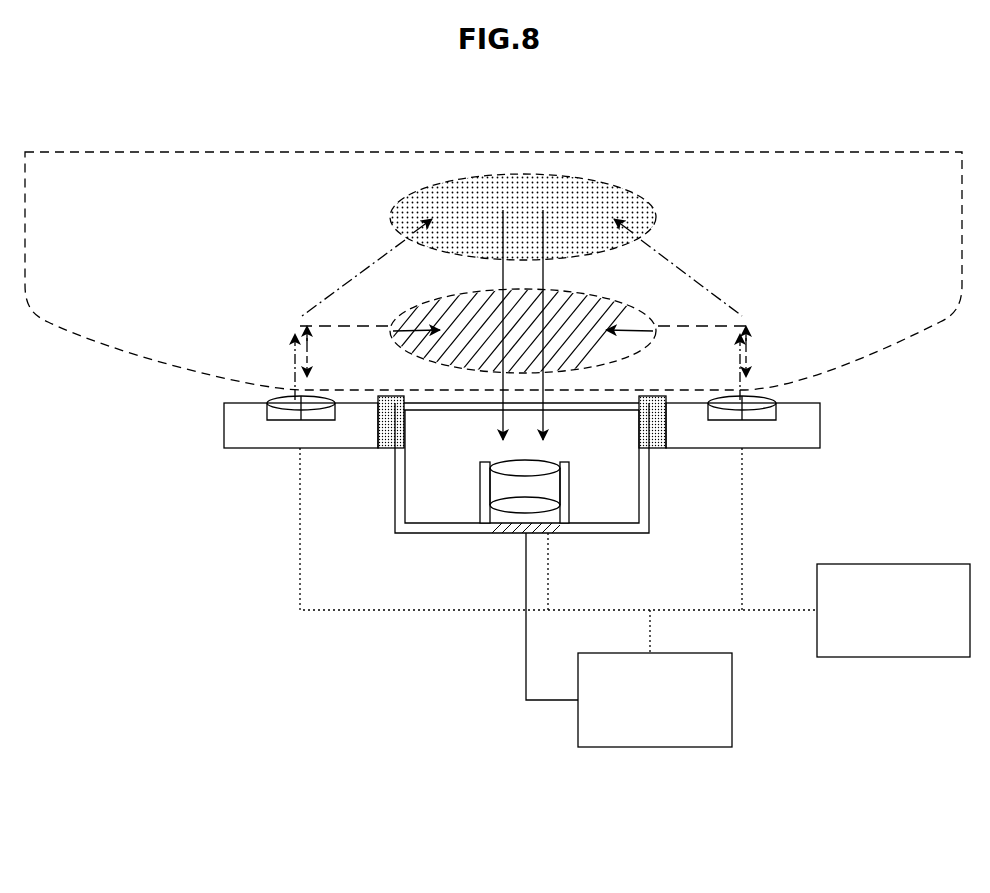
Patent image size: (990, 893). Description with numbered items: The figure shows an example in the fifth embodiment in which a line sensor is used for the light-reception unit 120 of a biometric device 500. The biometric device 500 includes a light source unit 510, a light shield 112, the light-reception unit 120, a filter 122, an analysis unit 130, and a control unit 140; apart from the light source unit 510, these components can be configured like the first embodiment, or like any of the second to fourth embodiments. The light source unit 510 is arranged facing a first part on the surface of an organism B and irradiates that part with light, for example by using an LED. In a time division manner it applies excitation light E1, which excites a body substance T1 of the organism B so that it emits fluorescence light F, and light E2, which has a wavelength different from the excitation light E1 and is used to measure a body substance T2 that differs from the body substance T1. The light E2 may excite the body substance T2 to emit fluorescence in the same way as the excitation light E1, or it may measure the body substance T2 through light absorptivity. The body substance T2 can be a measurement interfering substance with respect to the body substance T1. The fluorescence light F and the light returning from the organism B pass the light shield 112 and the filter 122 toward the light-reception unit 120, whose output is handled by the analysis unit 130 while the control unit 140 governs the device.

The organism B is at (830, 152).
The body substance T1 is at (636, 200).
The body substance T2 is at (596, 302).
The excitation light E1 is at (293, 334).
The light E2 is at (304, 376).
The fluorescence light F is at (548, 425).
The light source unit 510 is at (276, 448).
The light shield 112 is at (395, 449).
The filter 122 is at (455, 412).
The light-reception unit 120 is at (490, 553).
The analysis unit 130 is at (648, 747).
The control unit 140 is at (900, 657).
The biometric device 500 is at (403, 705).